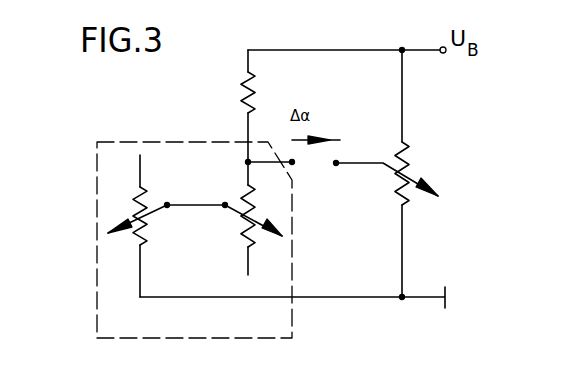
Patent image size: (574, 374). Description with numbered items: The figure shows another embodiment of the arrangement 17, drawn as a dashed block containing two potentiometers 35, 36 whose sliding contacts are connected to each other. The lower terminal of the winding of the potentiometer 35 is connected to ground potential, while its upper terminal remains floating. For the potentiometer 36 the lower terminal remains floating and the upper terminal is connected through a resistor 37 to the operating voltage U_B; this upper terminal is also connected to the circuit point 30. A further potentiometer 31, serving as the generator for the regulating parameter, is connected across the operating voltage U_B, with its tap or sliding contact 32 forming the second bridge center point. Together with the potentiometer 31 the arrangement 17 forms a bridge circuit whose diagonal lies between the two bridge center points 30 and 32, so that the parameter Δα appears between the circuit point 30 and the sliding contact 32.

The arrangement 17 is at (130, 155).
The circuit point 30 is at (293, 168).
The potentiometer 31 is at (393, 192).
The tap or sliding contact 32 is at (382, 163).
The potentiometer 35 is at (148, 238).
The potentiometer 36 is at (239, 226).
The resistor 37 is at (242, 98).